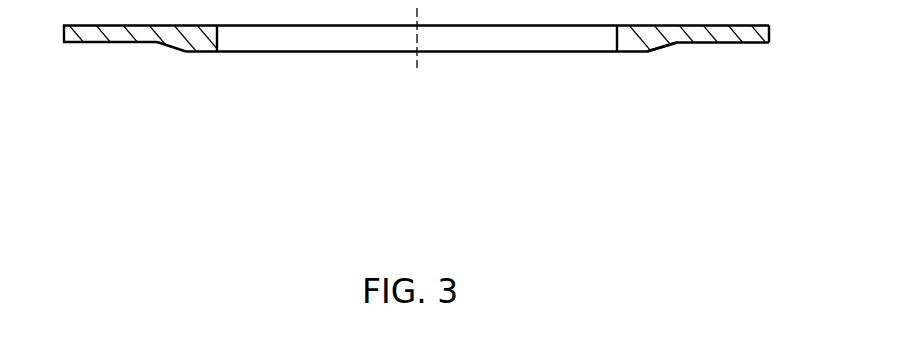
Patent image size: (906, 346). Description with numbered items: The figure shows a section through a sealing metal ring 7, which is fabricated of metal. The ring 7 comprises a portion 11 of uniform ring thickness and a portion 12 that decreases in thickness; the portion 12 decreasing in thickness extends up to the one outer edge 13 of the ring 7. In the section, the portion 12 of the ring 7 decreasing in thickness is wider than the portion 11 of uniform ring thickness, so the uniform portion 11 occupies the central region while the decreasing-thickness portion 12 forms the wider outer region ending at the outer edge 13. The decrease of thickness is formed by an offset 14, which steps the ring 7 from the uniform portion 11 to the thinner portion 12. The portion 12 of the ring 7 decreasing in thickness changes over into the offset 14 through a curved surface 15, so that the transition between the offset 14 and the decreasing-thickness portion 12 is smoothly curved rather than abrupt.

The ring 7 is at (323, 38).
The portion of uniform ring thickness 11 is at (202, 44).
The portion decreasing in thickness 12 is at (93, 33).
The outer edge 13 is at (770, 42).
The offset 14 is at (190, 53).
The curved surface 15 is at (667, 47).